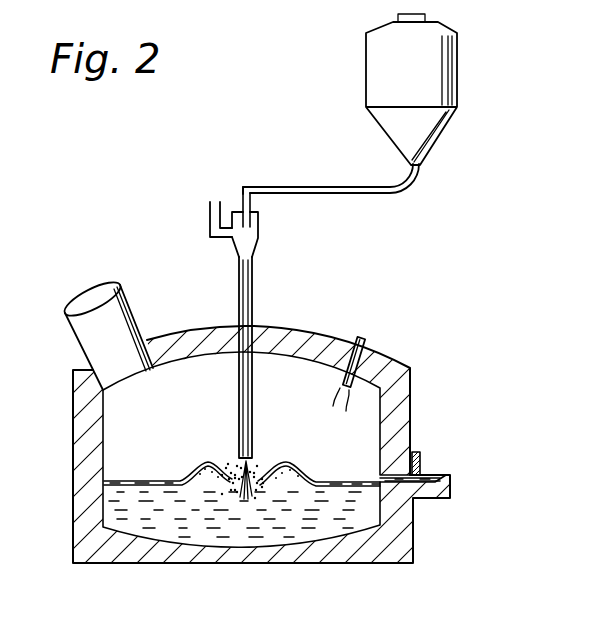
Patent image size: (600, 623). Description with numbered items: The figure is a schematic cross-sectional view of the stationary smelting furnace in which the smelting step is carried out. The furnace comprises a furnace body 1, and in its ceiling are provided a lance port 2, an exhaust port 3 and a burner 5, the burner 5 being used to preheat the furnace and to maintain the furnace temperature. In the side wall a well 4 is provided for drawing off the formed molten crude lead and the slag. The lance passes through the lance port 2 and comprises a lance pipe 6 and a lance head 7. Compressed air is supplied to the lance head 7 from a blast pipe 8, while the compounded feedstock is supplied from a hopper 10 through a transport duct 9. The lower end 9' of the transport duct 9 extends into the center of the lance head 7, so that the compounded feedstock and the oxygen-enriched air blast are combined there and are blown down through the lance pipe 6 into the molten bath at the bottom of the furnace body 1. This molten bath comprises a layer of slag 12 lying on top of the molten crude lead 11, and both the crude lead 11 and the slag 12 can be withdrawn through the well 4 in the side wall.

The furnace body 1 is at (201, 399).
The lance port 2 is at (238, 322).
The exhaust port 3 is at (120, 283).
The well 4 is at (430, 475).
The burner 5 is at (366, 338).
The lance pipe 6 is at (253, 292).
The lance head 7 is at (260, 241).
The blast pipe 8 is at (209, 222).
The transport duct 9 is at (331, 169).
The lower end of the transport duct 9' is at (273, 211).
The hopper 10 is at (446, 96).
The crude lead 11 is at (300, 533).
The slag 12 is at (148, 479).